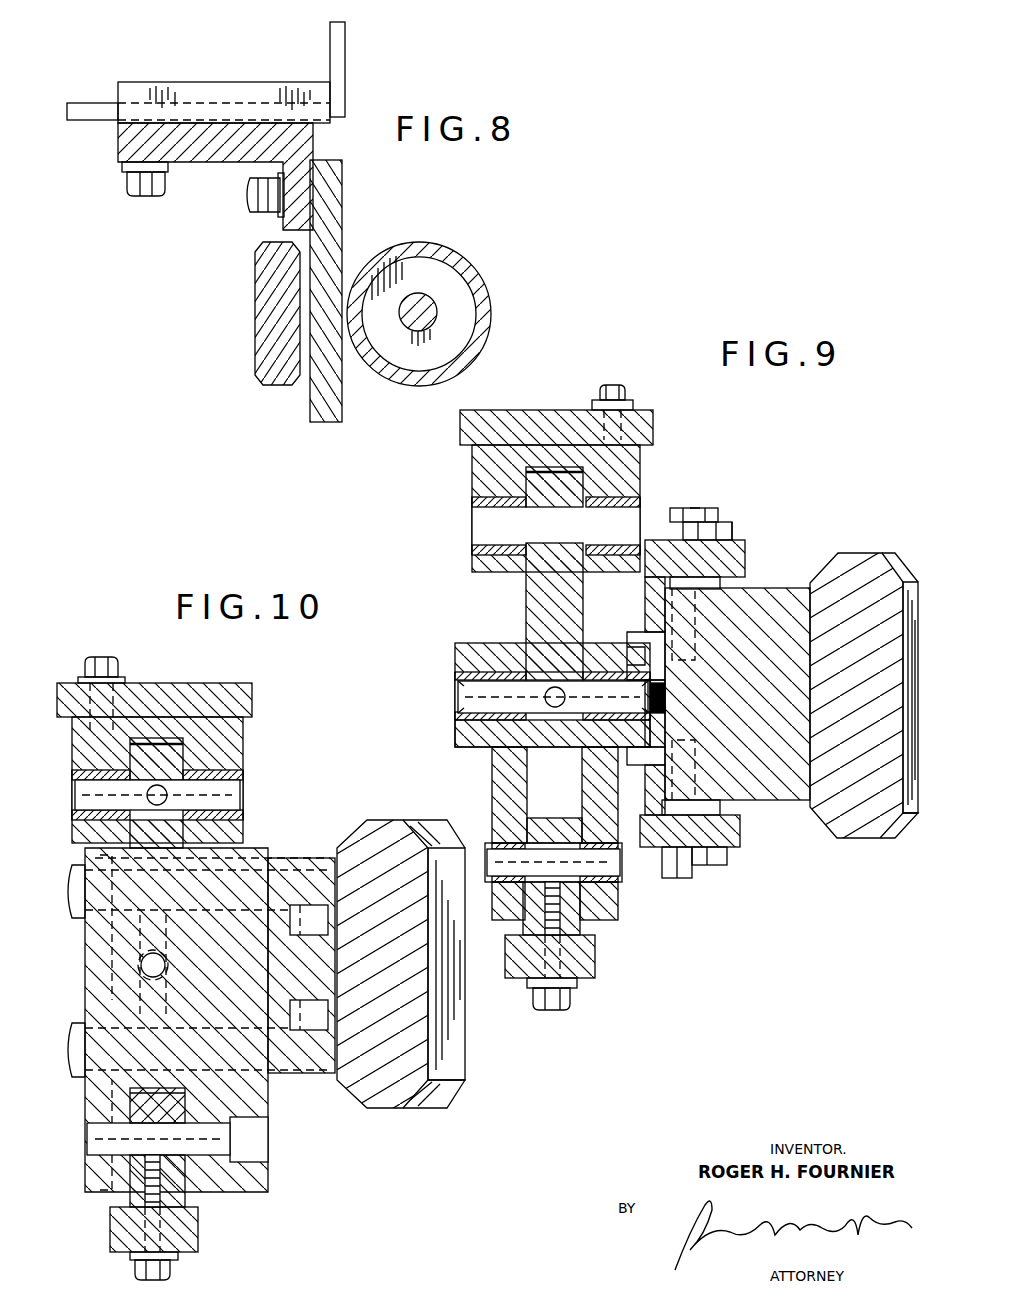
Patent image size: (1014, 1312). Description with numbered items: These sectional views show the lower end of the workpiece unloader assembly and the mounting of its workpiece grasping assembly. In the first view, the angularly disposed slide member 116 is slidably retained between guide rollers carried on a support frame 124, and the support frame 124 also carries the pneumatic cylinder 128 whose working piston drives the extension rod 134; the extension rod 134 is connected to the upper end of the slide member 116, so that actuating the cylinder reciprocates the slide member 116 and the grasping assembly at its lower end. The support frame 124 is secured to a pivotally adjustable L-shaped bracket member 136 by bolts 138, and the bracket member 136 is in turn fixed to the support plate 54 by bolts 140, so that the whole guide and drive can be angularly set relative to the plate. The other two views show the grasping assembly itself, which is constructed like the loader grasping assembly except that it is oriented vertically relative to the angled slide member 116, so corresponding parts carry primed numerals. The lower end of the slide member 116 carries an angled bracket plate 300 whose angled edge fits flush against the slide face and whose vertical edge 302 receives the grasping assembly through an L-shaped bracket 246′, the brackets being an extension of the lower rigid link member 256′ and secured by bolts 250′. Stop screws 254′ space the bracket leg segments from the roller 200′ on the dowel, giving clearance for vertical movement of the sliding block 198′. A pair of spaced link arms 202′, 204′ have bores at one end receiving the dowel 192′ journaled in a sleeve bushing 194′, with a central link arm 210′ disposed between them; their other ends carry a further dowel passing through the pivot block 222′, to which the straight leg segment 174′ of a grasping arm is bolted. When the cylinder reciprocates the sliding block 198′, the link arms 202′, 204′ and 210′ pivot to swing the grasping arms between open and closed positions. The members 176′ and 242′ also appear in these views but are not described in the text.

In FIG. 8, the support plate 54 is at (282, 82).
In FIG. 8, the L-shaped bracket member 136 is at (318, 142).
In FIG. 8, the bolts 140 is at (128, 184).
In FIG. 8, the bolts 138 is at (250, 200).
In FIG. 8, the slide member 116 is at (255, 340).
In FIG. 9, the slide member 116 is at (873, 553).
In FIG. 10, the slide member 116 is at (388, 820).
In FIG. 8, the support frame 124 is at (342, 405).
In FIG. 8, the pneumatic cylinder 128 is at (490, 296).
In FIG. 8, the extension rod 134 is at (440, 288).
In FIG. 9, the top plate 176′ is at (565, 410).
In FIG. 9, the bearing block 242′ is at (472, 480).
In FIG. 9, the central link arm 210′ is at (526, 608).
In FIG. 9, the sleeve bushing 194′ is at (455, 677).
In FIG. 9, the dowel 192′ is at (455, 700).
In FIG. 9, the sliding block 198′ is at (455, 730).
In FIG. 9, the link arm 202′ is at (492, 790).
In FIG. 9, the link arm 204′ is at (583, 800).
In FIG. 9, the pivot block 222′ is at (583, 925).
In FIG. 9, the straight leg segment 174′ is at (513, 983).
In FIG. 9, the roller 200′ is at (630, 642).
In FIG. 9, the vertical edge 302 is at (668, 692).
In FIG. 10, the vertical edge 302 is at (264, 958).
In FIG. 9, the L-shaped bracket 246′ is at (745, 546).
In FIG. 9, the bolts 250′ is at (684, 510).
In FIG. 9, the stop screws 254′ is at (726, 520).
In FIG. 9, the angled bracket plate 300 is at (778, 590).
In FIG. 10, the angled bracket plate 300 is at (305, 858).
In FIG. 10, the lower rigid link member 256′ is at (85, 985).